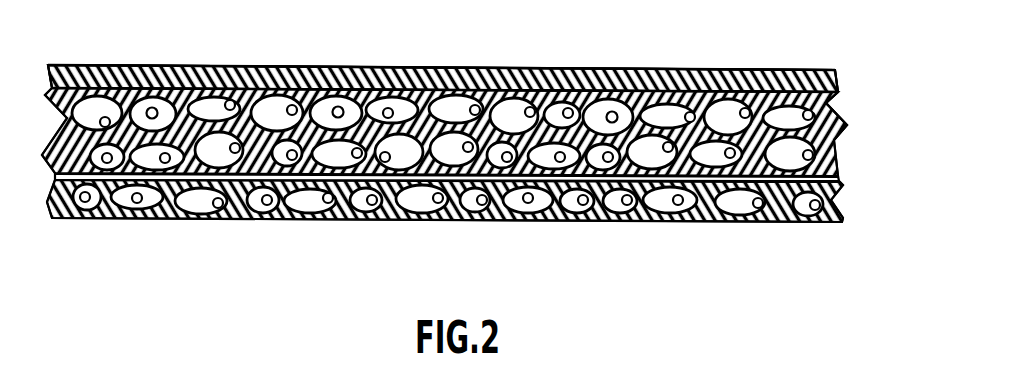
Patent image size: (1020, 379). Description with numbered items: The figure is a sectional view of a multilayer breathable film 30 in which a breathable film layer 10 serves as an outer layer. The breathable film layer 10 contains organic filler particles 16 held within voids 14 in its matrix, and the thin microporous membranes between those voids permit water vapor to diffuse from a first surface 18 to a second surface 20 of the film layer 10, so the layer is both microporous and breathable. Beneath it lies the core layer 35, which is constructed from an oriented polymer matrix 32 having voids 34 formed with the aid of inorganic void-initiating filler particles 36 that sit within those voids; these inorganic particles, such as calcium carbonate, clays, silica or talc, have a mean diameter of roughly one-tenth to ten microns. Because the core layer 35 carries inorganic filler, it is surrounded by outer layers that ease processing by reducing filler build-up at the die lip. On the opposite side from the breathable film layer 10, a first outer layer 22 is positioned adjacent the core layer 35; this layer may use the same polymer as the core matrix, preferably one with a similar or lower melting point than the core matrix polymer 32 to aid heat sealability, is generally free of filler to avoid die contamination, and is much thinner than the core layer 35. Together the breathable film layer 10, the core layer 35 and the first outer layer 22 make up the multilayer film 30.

The breathable film layer 10 is at (845, 221).
The voids 14 is at (505, 209).
The organic filler particles 16 is at (528, 204).
The first surface 18 is at (150, 65).
The second surface 20 is at (240, 220).
The first outer layer 22 is at (760, 79).
The multilayer film 30 is at (837, 148).
The oriented polymer matrix 32 is at (696, 80).
The voids 34 is at (588, 69).
The core layer 35 is at (838, 122).
The inorganic void-initiating filler particles 36 is at (611, 112).